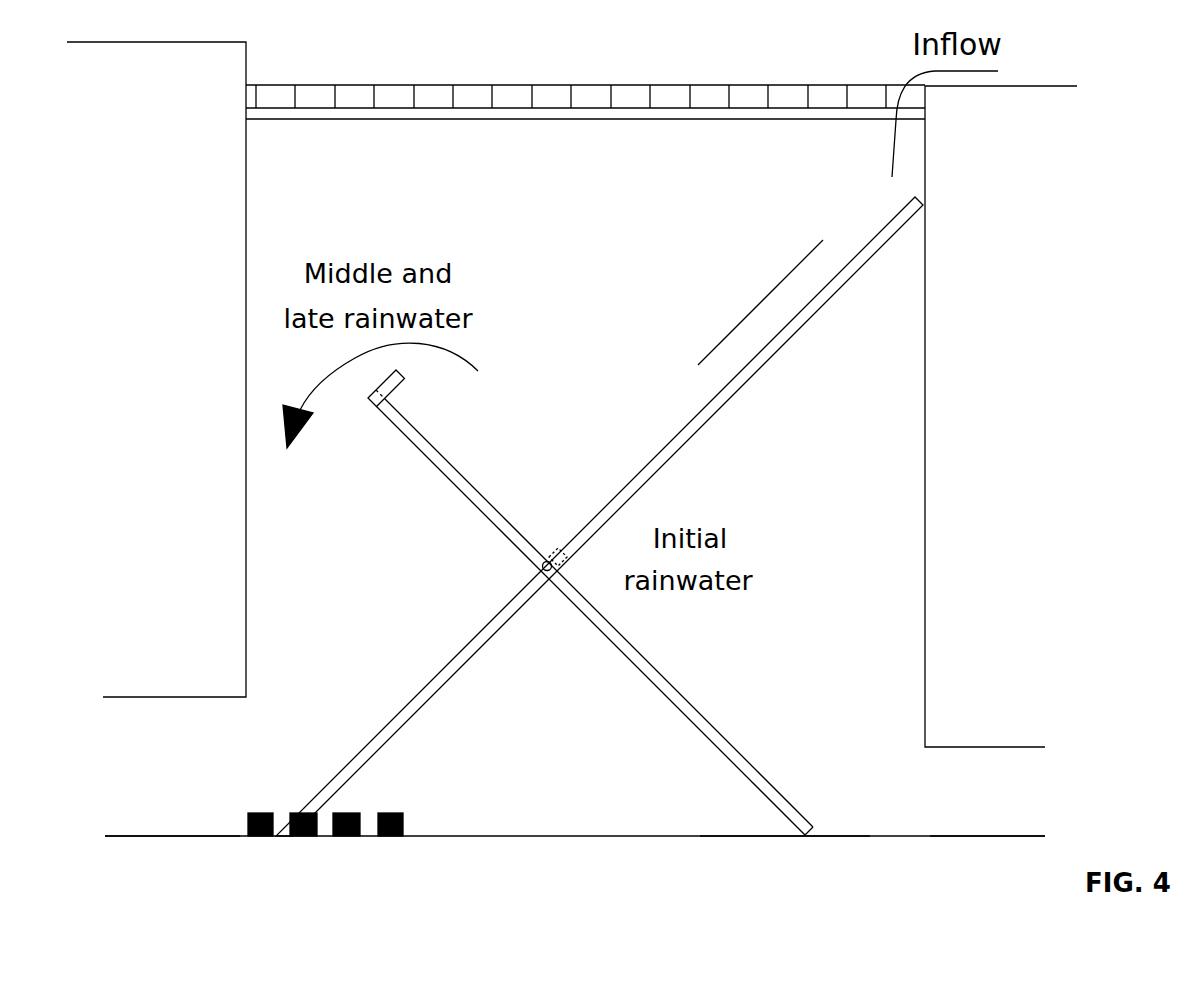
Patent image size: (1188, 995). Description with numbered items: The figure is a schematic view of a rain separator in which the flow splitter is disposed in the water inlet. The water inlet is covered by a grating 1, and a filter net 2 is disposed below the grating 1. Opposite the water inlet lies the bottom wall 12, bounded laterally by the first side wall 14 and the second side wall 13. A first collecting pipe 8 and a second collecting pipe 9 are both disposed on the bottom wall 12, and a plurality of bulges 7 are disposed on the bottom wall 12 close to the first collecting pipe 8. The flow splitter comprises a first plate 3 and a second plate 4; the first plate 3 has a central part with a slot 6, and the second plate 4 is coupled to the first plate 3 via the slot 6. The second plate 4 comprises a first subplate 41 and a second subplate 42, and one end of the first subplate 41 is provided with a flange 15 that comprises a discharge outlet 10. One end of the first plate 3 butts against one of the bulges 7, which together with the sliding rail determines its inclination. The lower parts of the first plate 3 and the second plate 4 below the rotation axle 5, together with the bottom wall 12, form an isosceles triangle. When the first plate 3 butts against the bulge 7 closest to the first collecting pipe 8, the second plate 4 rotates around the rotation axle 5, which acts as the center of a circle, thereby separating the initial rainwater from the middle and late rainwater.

The grating 1 is at (585, 66).
The filter net 2 is at (585, 158).
The first plate 3 is at (599, 516).
The second plate 4 is at (588, 617).
The rotation axle 5 is at (542, 562).
The slot 6 is at (533, 606).
The bulge 7 is at (374, 860).
The first collecting pipe 8 is at (172, 800).
The second collecting pipe 9 is at (987, 806).
The discharge outlet 10 is at (480, 428).
The bottom wall 12 is at (785, 871).
The second side wall 13 is at (1001, 416).
The first side wall 14 is at (156, 369).
The flange 15 is at (460, 388).
The first subplate 41 is at (456, 487).
The second subplate 42 is at (679, 699).